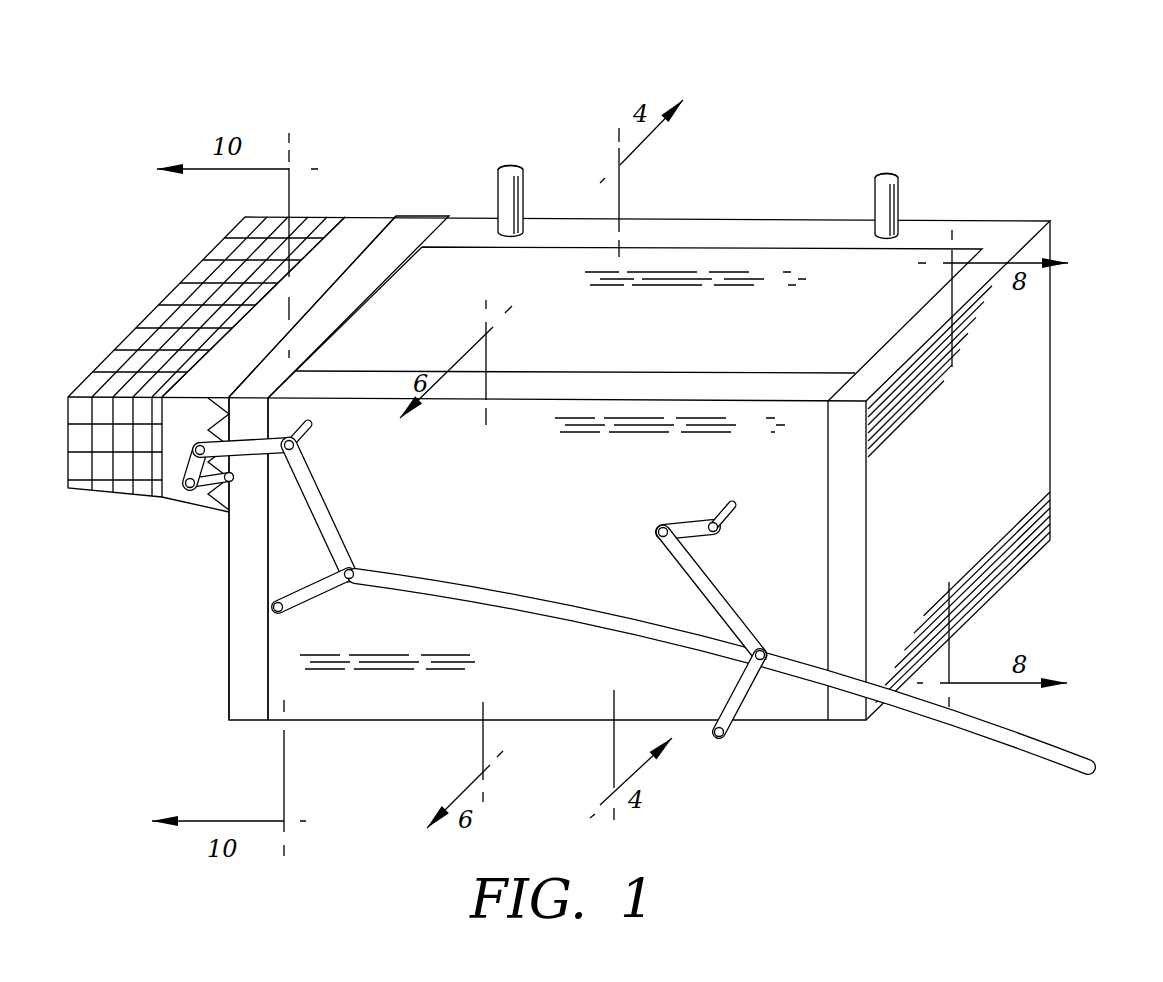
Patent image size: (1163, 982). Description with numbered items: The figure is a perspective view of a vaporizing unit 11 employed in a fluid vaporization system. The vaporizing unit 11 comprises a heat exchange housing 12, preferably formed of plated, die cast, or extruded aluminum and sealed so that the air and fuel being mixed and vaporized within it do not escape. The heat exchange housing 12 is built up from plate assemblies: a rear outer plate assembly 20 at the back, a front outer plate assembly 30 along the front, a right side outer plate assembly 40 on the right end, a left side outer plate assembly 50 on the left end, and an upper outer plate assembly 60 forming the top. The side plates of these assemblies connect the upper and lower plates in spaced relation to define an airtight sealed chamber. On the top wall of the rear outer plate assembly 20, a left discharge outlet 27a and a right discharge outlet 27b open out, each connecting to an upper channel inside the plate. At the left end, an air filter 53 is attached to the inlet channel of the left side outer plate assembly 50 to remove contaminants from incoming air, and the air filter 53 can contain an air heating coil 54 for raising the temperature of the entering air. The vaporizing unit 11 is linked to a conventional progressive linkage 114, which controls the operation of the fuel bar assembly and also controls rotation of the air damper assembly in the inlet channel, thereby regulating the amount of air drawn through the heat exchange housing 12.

The vaporizing unit 11 is at (740, 118).
The heat exchange housing 12 is at (1062, 316).
The rear outer plate assembly 20 is at (975, 237).
The left discharge outlet 27a is at (513, 172).
The right discharge outlet 27b is at (889, 177).
The front outer plate assembly 30 is at (686, 386).
The right side outer plate assembly 40 is at (1027, 445).
The left side outer plate assembly 50 is at (243, 562).
The air filter 53 is at (135, 342).
The air heating coil 54 is at (273, 340).
The upper outer plate assembly 60 is at (453, 280).
The progressive linkage 114 is at (352, 526).